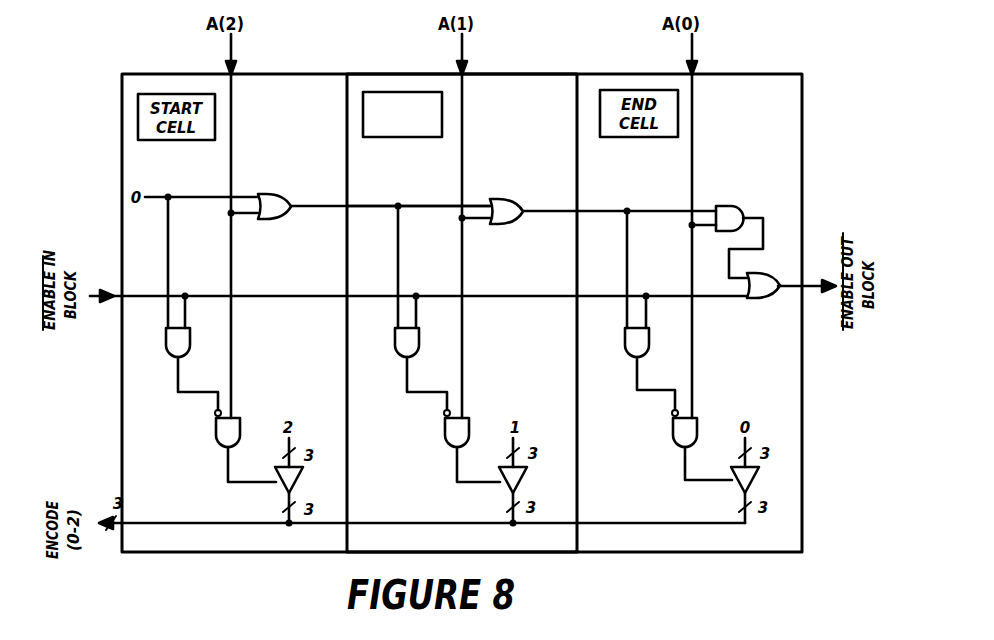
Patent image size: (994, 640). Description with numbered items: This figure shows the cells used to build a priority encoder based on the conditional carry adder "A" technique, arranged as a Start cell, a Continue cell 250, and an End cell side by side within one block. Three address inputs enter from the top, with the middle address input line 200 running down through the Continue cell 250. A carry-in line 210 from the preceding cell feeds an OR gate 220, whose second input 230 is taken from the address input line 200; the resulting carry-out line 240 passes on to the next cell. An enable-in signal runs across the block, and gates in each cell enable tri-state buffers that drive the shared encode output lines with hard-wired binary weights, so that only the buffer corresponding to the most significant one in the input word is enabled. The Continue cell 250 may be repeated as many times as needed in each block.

The address input line A(1) 200 is at (463, 138).
The carry-in line from preceding cell 210 is at (362, 205).
The OR gate 220 is at (474, 203).
The address input to OR gate 230 is at (507, 224).
The carry-out line to next cell 240 is at (566, 206).
The continue cell 250 is at (418, 473).